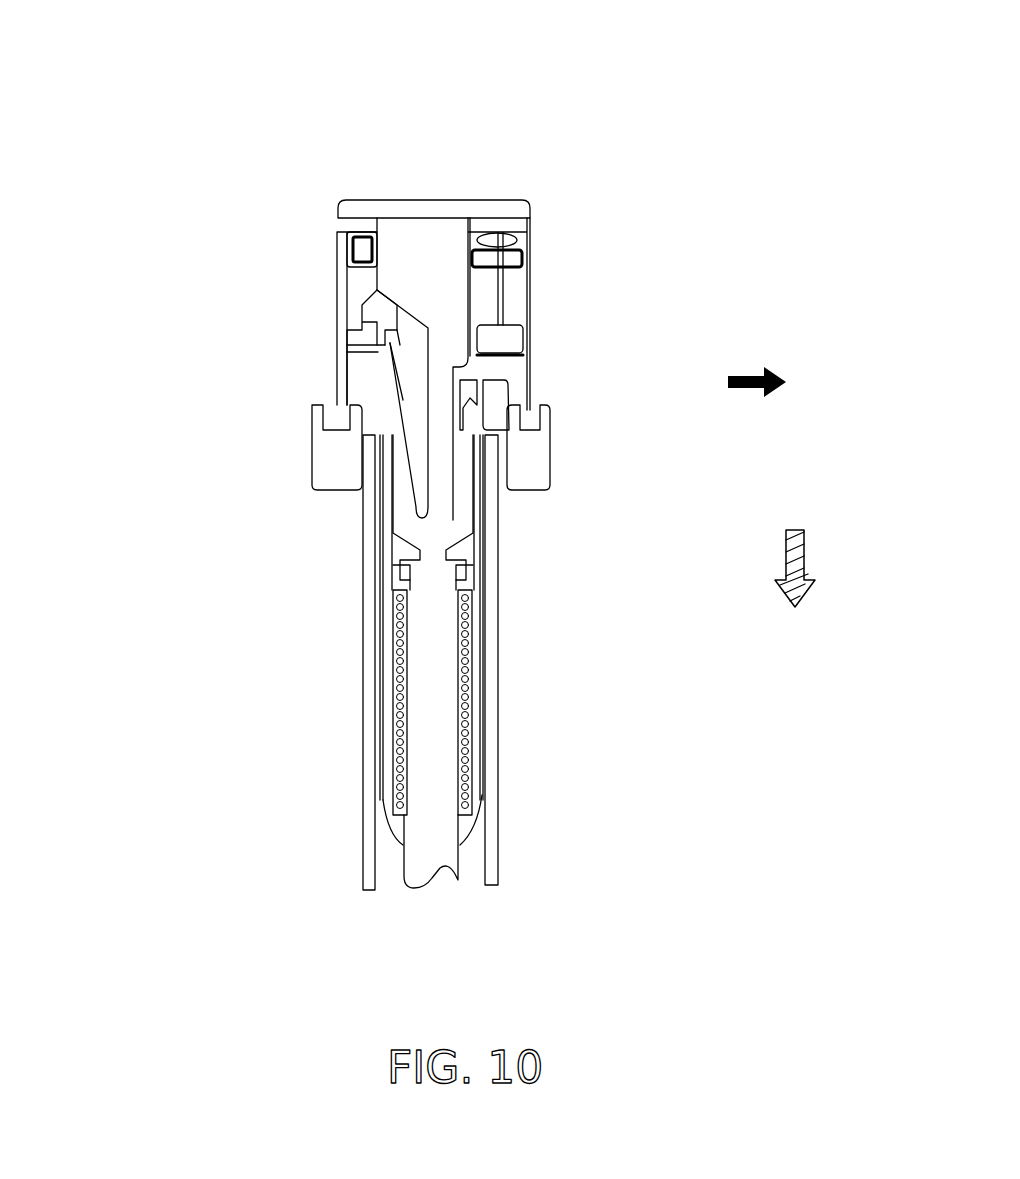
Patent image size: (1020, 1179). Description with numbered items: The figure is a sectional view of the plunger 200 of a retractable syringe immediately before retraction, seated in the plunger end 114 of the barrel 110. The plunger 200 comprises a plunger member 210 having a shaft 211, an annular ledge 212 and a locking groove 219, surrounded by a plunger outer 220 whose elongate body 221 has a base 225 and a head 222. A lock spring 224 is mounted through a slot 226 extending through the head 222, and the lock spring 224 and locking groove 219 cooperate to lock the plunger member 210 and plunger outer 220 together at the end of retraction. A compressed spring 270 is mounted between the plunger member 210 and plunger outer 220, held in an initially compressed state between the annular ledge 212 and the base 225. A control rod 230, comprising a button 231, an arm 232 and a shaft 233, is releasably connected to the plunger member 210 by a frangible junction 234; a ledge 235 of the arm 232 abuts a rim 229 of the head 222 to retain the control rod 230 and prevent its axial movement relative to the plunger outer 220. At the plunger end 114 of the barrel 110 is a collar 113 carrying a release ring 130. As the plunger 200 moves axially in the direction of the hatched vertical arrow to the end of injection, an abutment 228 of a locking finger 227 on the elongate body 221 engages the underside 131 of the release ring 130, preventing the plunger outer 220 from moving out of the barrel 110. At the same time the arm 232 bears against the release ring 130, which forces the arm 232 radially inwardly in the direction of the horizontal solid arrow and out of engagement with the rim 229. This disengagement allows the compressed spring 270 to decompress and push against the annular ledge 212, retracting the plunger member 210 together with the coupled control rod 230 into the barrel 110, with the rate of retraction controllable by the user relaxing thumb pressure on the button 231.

The plunger 200 is at (416, 130).
The lock spring 224 is at (522, 252).
The button 231 is at (415, 205).
The slot 226 is at (540, 260).
The head 222 is at (322, 230).
The shaft 233 is at (320, 302).
The rim 229 is at (345, 324).
The ledge 235 is at (372, 350).
The arm 232 is at (398, 380).
The abutment 228 is at (487, 355).
The release ring 130 is at (490, 388).
The underside 131 is at (507, 407).
The locking finger 227 is at (510, 423).
The collar 113 is at (570, 430).
The plunger end 114 is at (213, 466).
The control rod 230 is at (345, 510).
The frangible junction 234 is at (470, 548).
The annular ledge 212 is at (395, 578).
The locking groove 219 is at (462, 572).
The plunger member 210 is at (518, 628).
The compressed spring 270 is at (395, 683).
The plunger outer 220 is at (513, 733).
The barrel 110 is at (347, 756).
The elongate body 221 is at (478, 782).
The base 225 is at (400, 817).
The shaft 211 is at (434, 852).